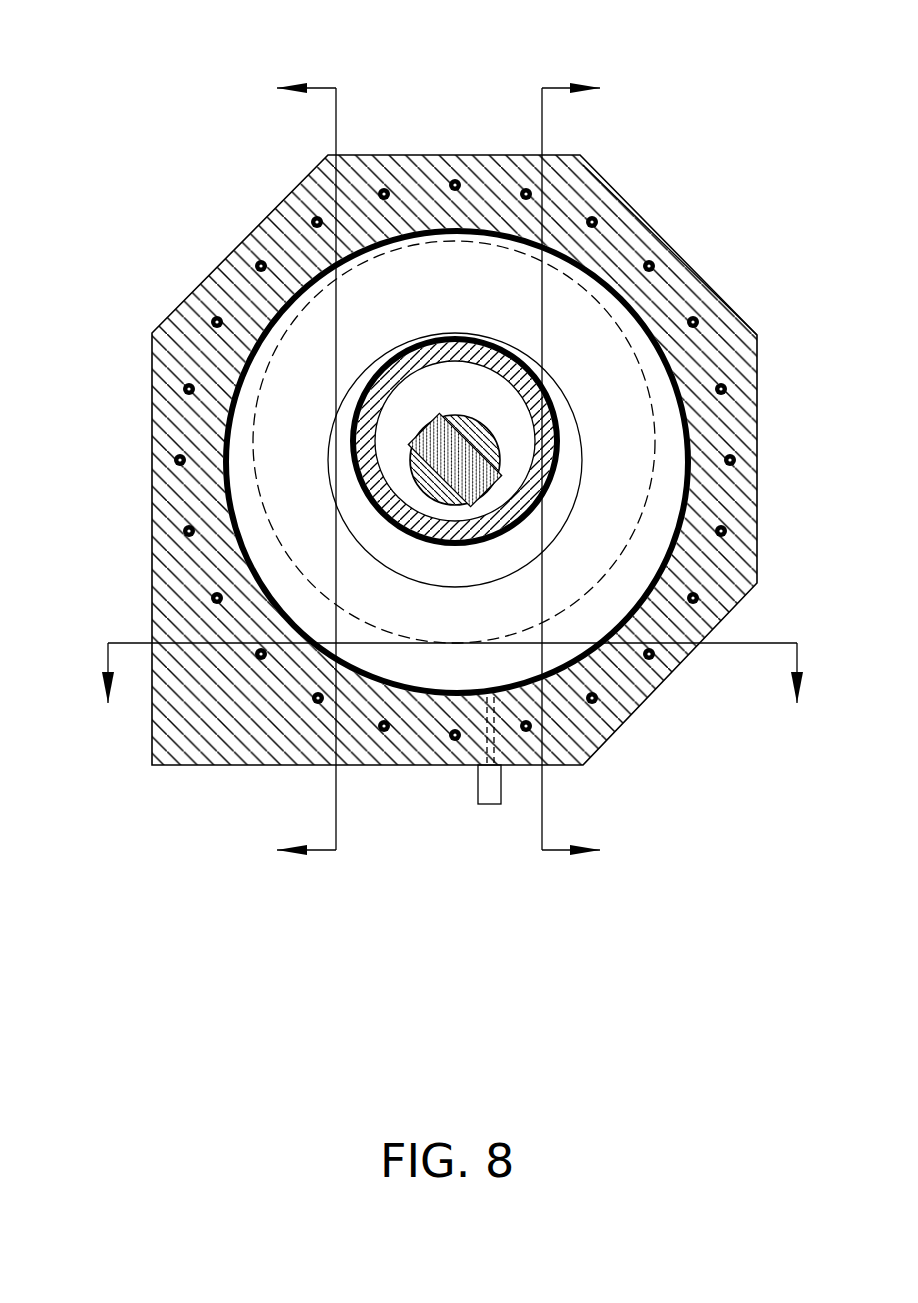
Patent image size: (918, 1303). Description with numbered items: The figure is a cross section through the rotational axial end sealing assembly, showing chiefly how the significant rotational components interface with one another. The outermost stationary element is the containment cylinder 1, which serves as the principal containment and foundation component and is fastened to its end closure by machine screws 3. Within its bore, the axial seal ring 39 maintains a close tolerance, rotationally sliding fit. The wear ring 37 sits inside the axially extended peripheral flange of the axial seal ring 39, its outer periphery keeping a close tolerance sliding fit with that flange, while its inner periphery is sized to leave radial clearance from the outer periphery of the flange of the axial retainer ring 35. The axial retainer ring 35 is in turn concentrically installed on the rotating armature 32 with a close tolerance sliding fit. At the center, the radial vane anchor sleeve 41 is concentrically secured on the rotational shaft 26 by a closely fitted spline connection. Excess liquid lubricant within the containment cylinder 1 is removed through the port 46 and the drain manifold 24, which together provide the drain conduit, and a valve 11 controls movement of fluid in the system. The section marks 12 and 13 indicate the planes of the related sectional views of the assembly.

The containment cylinder 1 is at (730, 298).
The machine screws 3 is at (360, 250).
The rotating armature 32 is at (420, 350).
The axial retainer ring 35 is at (380, 370).
The wear ring 37 is at (300, 368).
The axial seal ring 39 is at (240, 375).
The radial vane anchor sleeve 41 is at (488, 420).
The rotational shaft 26 is at (478, 490).
The port 46 is at (487, 737).
The drain manifold 24 is at (482, 804).
The valve 11 is at (451, 673).
The section line 12- 12 is at (306, 449).
The section line 13- 13 is at (571, 449).